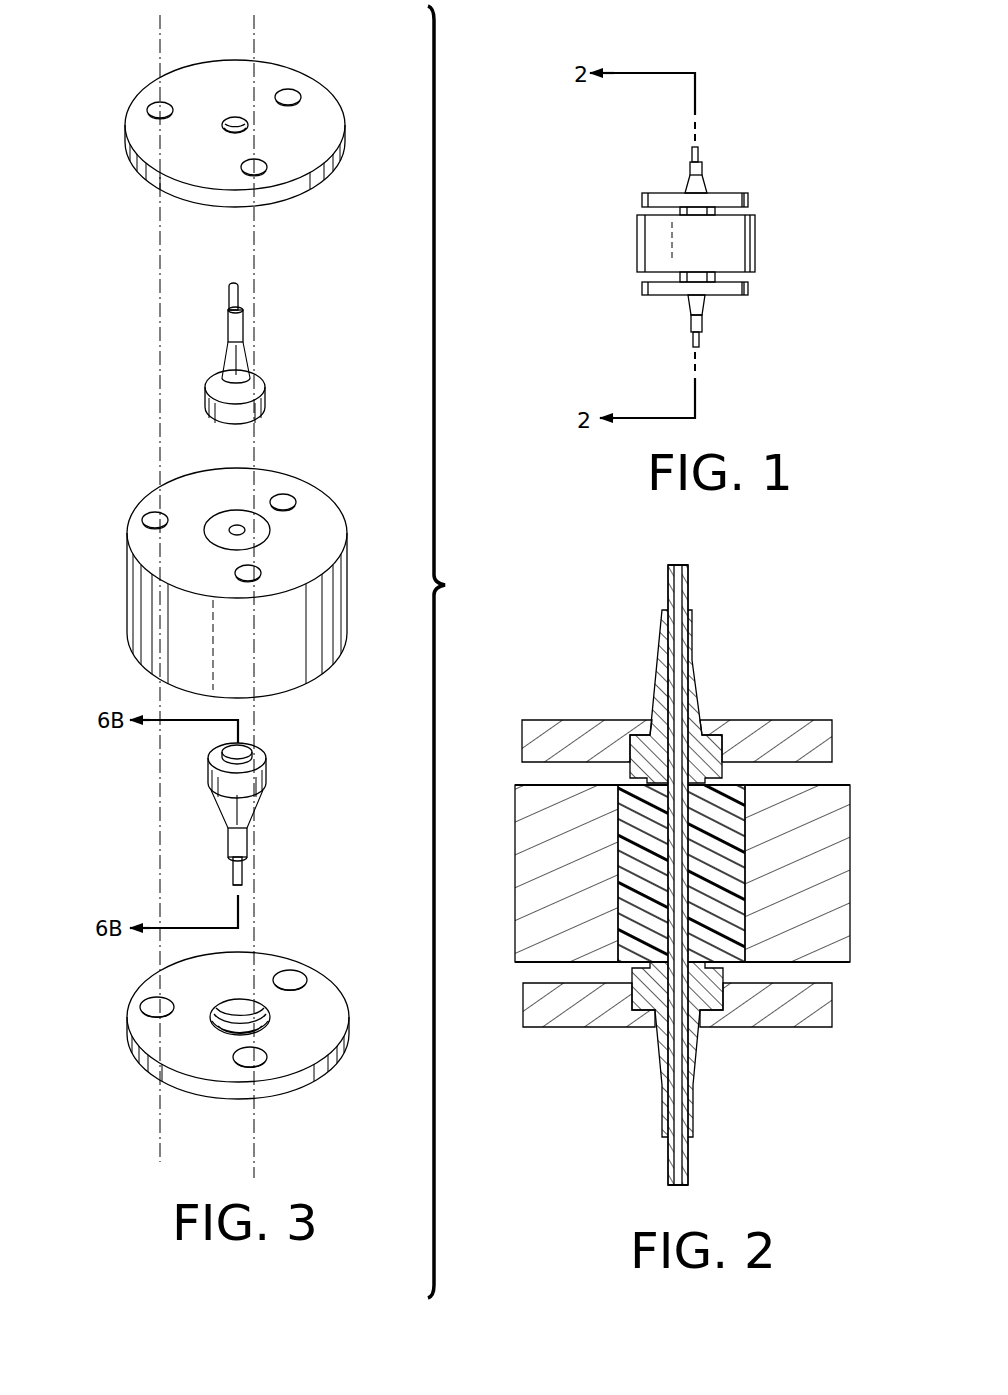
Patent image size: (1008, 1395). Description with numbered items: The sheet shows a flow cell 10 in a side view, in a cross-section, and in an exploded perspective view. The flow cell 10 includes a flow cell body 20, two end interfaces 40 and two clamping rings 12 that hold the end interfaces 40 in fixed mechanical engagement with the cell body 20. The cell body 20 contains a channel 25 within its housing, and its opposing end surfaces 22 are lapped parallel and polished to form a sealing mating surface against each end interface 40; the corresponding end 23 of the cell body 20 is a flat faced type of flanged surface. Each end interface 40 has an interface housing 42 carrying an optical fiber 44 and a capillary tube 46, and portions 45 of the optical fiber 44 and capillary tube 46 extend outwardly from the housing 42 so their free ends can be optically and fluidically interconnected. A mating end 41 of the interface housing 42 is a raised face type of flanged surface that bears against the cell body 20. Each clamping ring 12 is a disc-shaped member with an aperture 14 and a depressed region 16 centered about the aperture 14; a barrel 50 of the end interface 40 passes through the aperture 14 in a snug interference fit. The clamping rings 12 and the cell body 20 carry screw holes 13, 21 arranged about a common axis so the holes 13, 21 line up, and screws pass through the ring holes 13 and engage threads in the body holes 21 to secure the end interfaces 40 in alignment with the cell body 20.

In FIG. 3, the flow cell 10 is at (288, 15).
In FIG. 1, the flow cell 10 is at (800, 178).
In FIG. 2, the flow cell 10 is at (864, 624).
In FIG. 3, the clamping ring 12 is at (345, 128).
In FIG. 1, the clamping ring 12 is at (748, 193).
In FIG. 2, the clamping ring 12 is at (832, 726).
In FIG. 3, the screw hole 13 is at (295, 92).
In FIG. 3, the aperture 14 is at (230, 118).
In FIG. 3, the depressed region 16 is at (235, 1010).
In FIG. 3, the flow cell body 20 is at (357, 478).
In FIG. 1, the flow cell body 20 is at (757, 240).
In FIG. 2, the flow cell body 20 is at (850, 885).
In FIG. 3, the screw hole 21 is at (283, 500).
In FIG. 3, the end surface 22 is at (320, 545).
In FIG. 2, the end surface 22 is at (850, 788).
In FIG. 3, the end of the flow cell body 23 is at (127, 490).
In FIG. 1, the end of the flow cell body 23 is at (762, 212).
In FIG. 2, the end of the flow cell body 23 is at (517, 770).
In FIG. 2, the channel 25 is at (763, 873).
In FIG. 3, the end interface 40 is at (290, 317).
In FIG. 1, the end interface 40 is at (690, 163).
In FIG. 2, the end interface 40 is at (700, 686).
In FIG. 3, the mating end 41 is at (282, 752).
In FIG. 2, the mating end 41 is at (772, 780).
In FIG. 3, the interface housing 42 is at (263, 747).
In FIG. 2, the interface housing 42 is at (695, 1135).
In FIG. 3, the optical fiber 44 is at (233, 872).
In FIG. 2, the optical fiber 44 is at (688, 565).
In FIG. 3, the portions of the optical fiber and capillary tube 45 is at (264, 284).
In FIG. 1, the portions of the optical fiber and capillary tube 45 is at (722, 144).
In FIG. 2, the portions of the optical fiber and capillary tube 45 is at (714, 590).
In FIG. 3, the capillary tube 46 is at (245, 885).
In FIG. 2, the capillary tube 46 is at (668, 565).
In FIG. 3, the barrel 50 is at (243, 362).
In FIG. 2, the barrel 50 is at (655, 696).